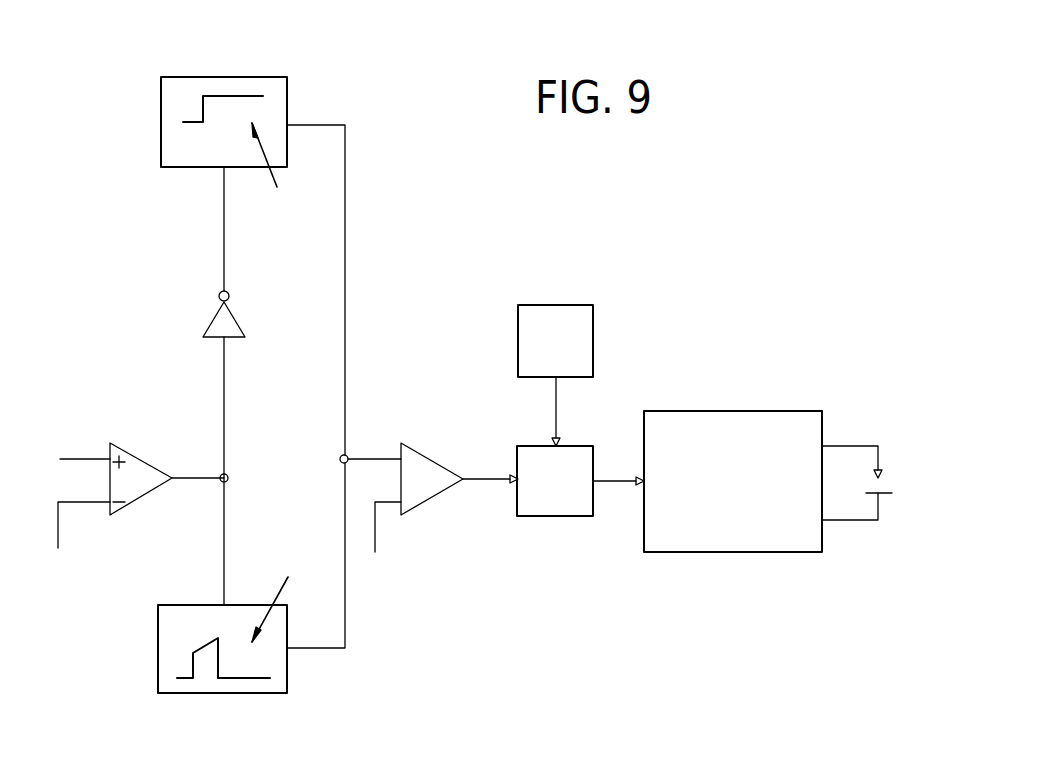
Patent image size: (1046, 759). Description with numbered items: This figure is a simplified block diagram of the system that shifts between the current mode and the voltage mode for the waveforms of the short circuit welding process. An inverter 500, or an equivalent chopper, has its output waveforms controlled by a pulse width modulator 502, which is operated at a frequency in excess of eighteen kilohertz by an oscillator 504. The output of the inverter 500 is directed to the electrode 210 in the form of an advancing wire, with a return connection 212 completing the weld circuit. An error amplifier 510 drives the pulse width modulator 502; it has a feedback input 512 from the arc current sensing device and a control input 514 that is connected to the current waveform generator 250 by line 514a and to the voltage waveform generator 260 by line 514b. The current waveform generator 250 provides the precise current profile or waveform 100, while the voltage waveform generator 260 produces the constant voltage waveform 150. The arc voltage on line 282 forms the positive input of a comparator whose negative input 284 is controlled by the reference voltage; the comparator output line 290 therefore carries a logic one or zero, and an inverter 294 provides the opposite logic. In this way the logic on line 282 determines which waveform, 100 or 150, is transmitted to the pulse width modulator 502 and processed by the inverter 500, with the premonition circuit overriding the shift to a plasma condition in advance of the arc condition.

The voltage waveform generator 260 is at (273, 77).
The constant waveform 150 is at (283, 174).
The inverter 294 is at (235, 317).
The output line 290 is at (226, 476).
The positive input 282 is at (83, 459).
The negative input 284 is at (83, 502).
The current waveform 100 is at (286, 593).
The current waveform generator 250 is at (247, 693).
The line 514b is at (345, 197).
The line 514a is at (345, 608).
The control input 514 is at (375, 459).
The error amplifier 510 is at (430, 457).
The feedback input 512 is at (383, 502).
The oscillator 504 is at (572, 305).
The pulse width modulator 502 is at (555, 516).
The inverter 500 is at (733, 410).
The electrode 210 is at (840, 446).
The return terminal line 212 is at (847, 520).